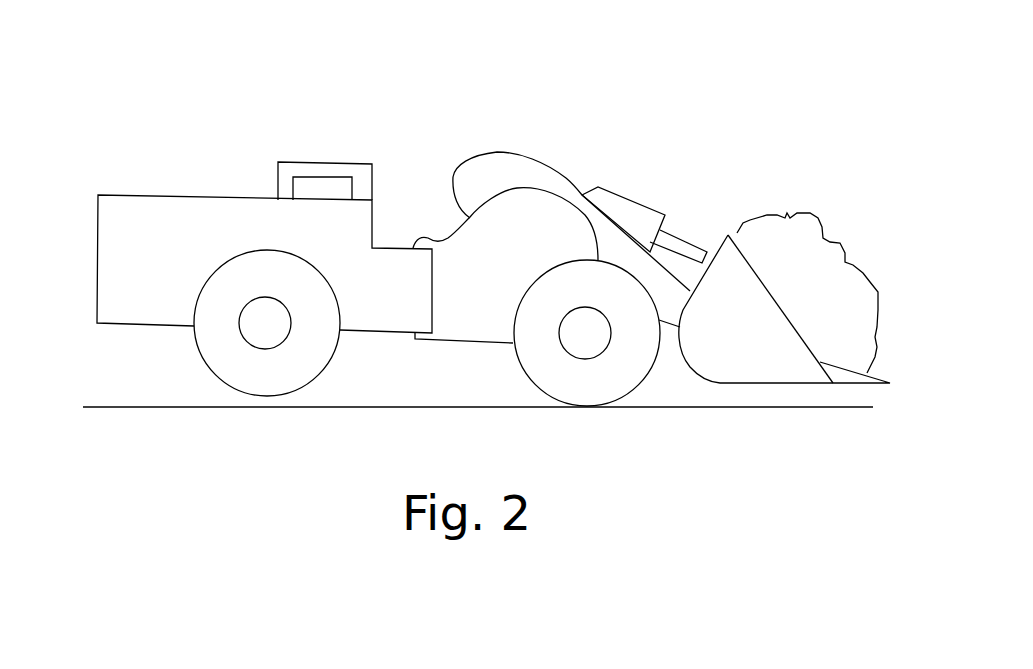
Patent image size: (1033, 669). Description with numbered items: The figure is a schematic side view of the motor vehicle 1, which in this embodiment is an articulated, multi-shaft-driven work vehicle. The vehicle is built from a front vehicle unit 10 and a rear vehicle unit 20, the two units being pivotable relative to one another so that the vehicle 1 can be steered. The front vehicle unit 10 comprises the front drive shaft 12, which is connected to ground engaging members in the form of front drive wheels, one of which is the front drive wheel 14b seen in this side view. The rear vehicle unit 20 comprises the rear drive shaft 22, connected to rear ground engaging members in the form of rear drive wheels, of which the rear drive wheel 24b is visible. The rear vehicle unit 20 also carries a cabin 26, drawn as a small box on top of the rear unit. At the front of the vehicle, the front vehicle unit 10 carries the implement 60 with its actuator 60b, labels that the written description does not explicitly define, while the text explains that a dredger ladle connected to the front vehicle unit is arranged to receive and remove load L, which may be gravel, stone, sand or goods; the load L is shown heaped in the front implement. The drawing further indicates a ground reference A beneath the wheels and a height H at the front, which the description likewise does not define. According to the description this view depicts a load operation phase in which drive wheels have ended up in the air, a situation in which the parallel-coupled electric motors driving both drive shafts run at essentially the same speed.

The motor vehicle 1 is at (728, 89).
The front vehicle unit 10 is at (438, 236).
The front drive shaft 12 is at (585, 333).
The front drive wheel 14b is at (537, 377).
The rear vehicle unit 20 is at (135, 195).
The rear drive shaft 22 is at (268, 320).
The rear drive wheel 24b is at (310, 375).
The cabin 26 is at (315, 168).
The bucket 60 is at (753, 368).
The bucket cylinder 60b is at (678, 240).
The ground surface A is at (178, 407).
The height H is at (832, 408).
The load L is at (787, 214).